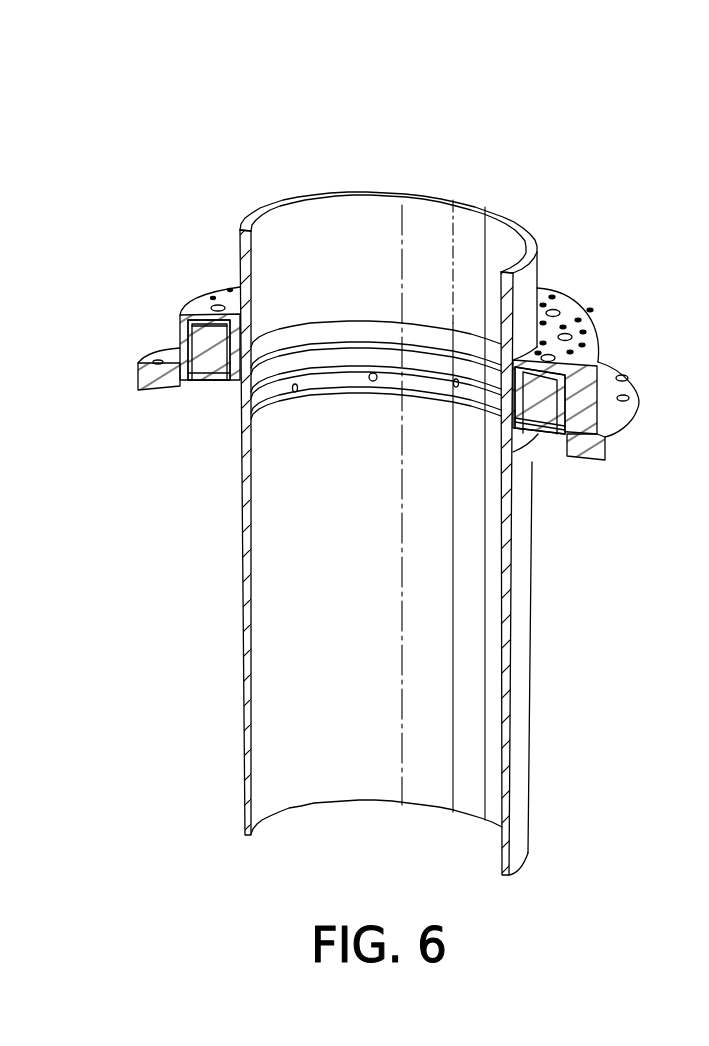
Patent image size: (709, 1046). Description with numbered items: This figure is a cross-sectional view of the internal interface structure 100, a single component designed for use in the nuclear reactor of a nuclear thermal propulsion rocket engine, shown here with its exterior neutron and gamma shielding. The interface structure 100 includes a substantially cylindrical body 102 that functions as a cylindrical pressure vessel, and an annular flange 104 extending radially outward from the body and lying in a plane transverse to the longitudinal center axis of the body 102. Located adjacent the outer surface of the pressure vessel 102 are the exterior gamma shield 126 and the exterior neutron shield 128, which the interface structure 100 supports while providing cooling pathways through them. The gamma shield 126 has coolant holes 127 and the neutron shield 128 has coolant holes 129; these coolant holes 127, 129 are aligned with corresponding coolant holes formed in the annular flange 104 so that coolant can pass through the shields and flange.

The internal interface structure 100 is at (375, 533).
The cylindrical body 102 is at (540, 653).
The annular flange 104 is at (138, 376).
The exterior gamma shield 126 is at (580, 300).
The coolant holes 127 is at (190, 300).
The exterior neutron shield 128 is at (600, 410).
The coolant holes 129 is at (222, 352).